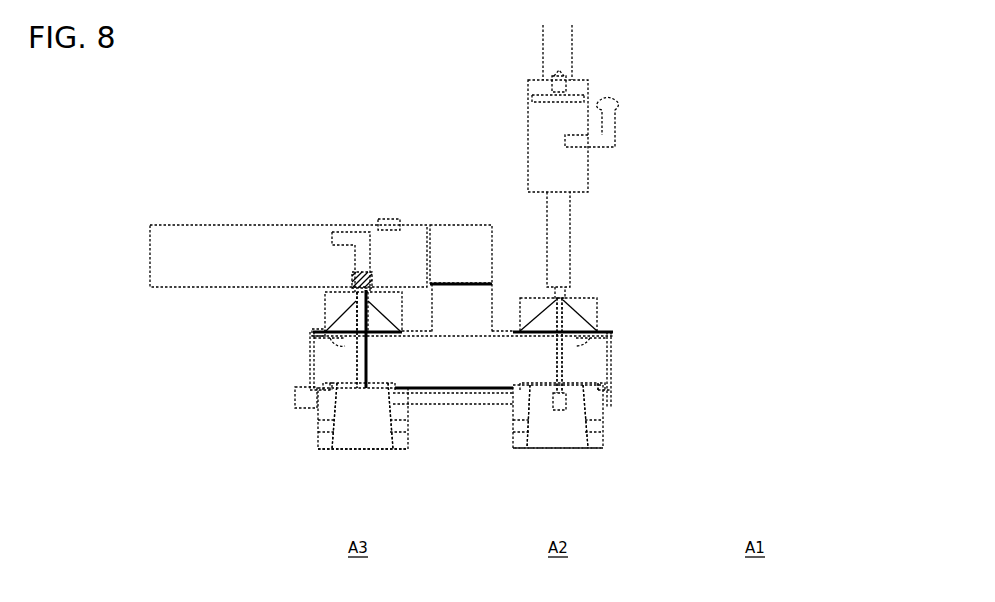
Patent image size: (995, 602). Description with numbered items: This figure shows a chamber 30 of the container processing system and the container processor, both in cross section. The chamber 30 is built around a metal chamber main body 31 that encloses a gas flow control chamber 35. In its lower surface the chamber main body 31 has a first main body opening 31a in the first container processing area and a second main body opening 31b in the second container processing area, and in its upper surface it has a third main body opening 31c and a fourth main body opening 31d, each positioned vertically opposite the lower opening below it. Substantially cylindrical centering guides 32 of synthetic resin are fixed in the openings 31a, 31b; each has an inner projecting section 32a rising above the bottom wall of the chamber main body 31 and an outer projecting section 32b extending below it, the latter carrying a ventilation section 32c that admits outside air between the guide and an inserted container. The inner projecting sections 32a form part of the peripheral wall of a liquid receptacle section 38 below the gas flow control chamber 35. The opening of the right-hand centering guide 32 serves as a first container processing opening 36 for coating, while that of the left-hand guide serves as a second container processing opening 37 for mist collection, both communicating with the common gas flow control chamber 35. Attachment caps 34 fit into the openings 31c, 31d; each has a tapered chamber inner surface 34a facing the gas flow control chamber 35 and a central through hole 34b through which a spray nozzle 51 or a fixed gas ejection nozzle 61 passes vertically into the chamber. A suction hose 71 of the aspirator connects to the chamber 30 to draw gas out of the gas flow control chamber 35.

The chamber 30 is at (313, 328).
The chamber main body 31 is at (312, 360).
The first main body opening 31a is at (597, 385).
The second main body opening 31b is at (324, 386).
The third main body opening 31c is at (592, 345).
The fourth main body opening 31d is at (318, 343).
The centering guide 32 is at (322, 405).
The inner projecting section 32a is at (405, 395).
The outer projecting section 32b is at (318, 452).
The ventilation section 32c is at (322, 432).
The attachment cap 34 is at (335, 300).
The chamber inner surface 34a is at (385, 320).
The through hole 34b is at (372, 300).
The gas flow control chamber 35 is at (471, 369).
The first container processing opening 36 is at (567, 438).
The second container processing opening 37 is at (376, 438).
The liquid receptacle section 38 is at (456, 394).
The spray nozzle 51 is at (556, 395).
The gas ejection nozzle 61 is at (360, 390).
The suction hose 71 is at (216, 258).